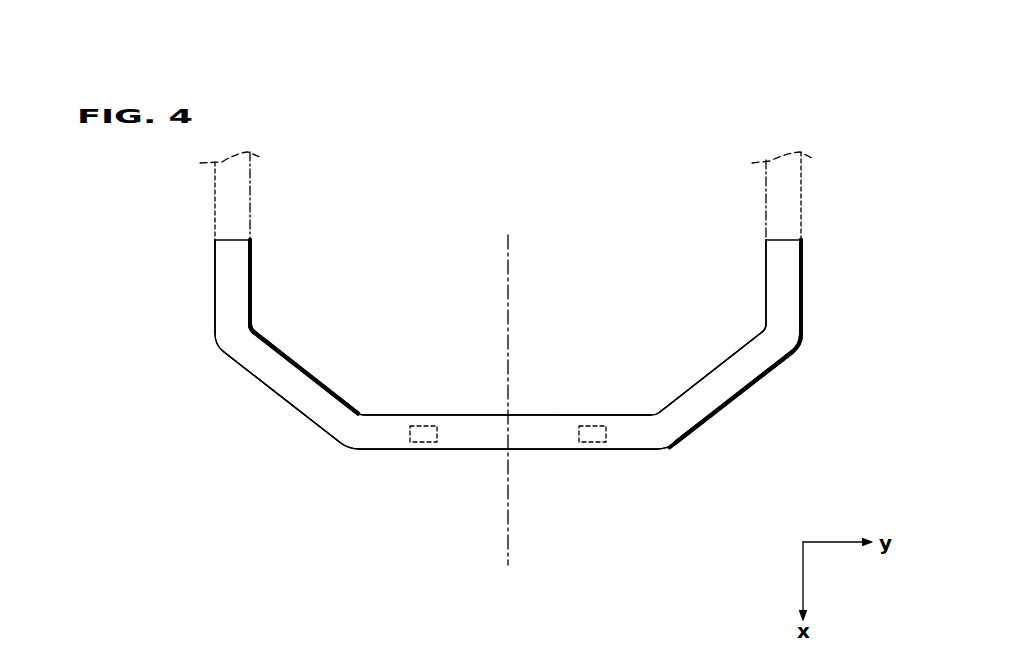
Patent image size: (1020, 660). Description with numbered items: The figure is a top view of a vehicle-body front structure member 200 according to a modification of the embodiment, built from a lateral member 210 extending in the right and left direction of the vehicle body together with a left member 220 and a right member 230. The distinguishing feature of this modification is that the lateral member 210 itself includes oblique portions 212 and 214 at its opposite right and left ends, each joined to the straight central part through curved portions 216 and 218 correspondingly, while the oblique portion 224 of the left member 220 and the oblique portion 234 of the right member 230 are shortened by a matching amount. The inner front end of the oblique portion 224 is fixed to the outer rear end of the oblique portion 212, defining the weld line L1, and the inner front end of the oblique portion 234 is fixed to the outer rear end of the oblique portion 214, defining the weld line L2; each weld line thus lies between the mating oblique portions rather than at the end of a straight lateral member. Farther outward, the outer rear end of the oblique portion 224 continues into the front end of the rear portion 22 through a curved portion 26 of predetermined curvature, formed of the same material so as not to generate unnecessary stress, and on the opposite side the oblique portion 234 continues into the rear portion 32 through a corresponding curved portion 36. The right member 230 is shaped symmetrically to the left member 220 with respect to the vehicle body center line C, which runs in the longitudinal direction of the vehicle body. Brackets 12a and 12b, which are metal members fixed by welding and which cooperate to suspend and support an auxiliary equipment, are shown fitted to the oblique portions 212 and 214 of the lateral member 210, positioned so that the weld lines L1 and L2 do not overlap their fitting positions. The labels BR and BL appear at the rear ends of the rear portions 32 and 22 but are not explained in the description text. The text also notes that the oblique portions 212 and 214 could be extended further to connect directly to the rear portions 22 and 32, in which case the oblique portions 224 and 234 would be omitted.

The vehicle-body front structure member 200 is at (646, 227).
The lateral member 210 is at (542, 400).
The oblique portion 212 is at (683, 413).
The oblique portion 214 is at (332, 413).
The curved portion 216 is at (643, 400).
The curved portion 218 is at (361, 405).
The left member 220 is at (797, 375).
The oblique portion 224 is at (727, 373).
The right member 230 is at (213, 355).
The oblique portion 234 is at (280, 372).
The rear portion 22 is at (785, 288).
The curved portion 26 is at (758, 313).
The rear portion 32 is at (240, 275).
The curved portion 36 is at (255, 317).
The bracket 12a is at (598, 448).
The bracket 12b is at (420, 448).
The right boundary BR is at (222, 208).
The left boundary BL is at (794, 212).
The weld line L1 is at (710, 410).
The weld line L2 is at (312, 407).
The vehicle body center line C is at (510, 293).